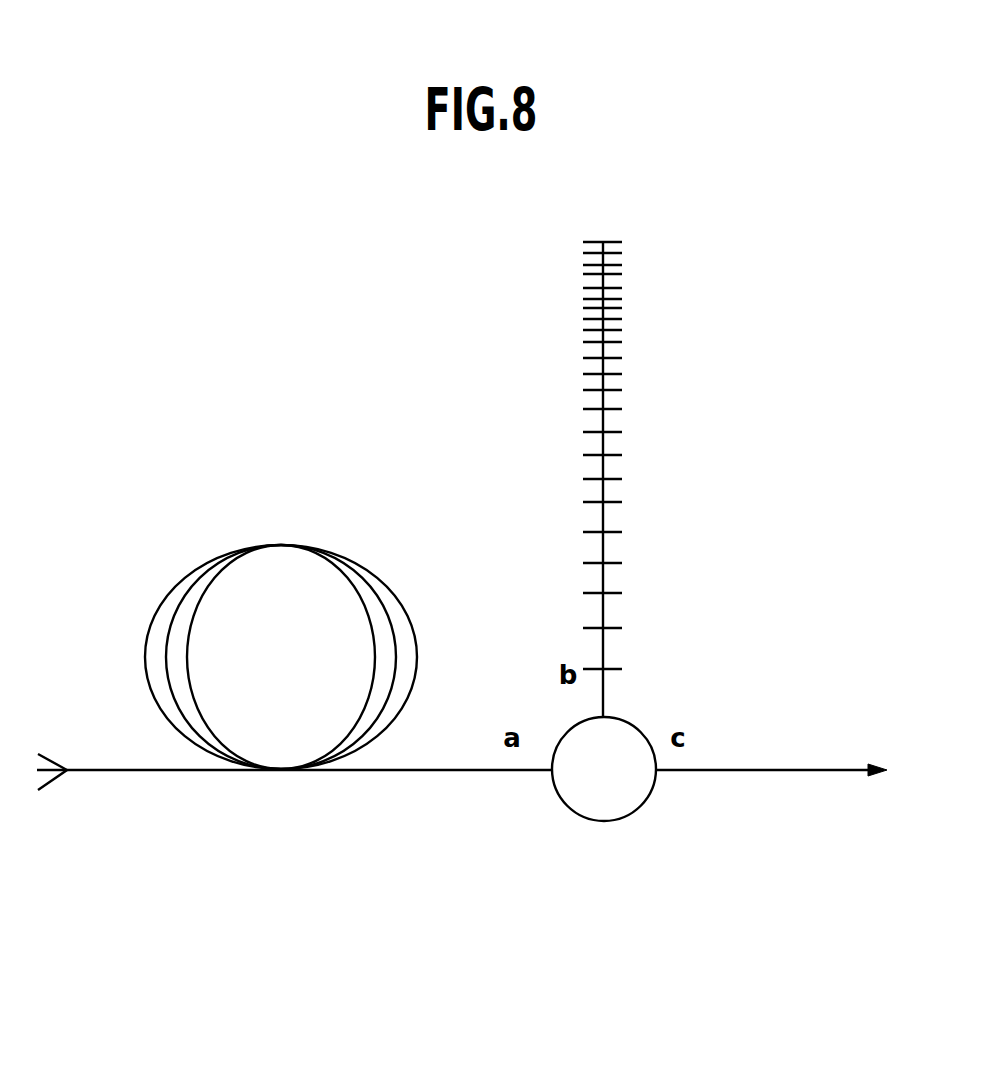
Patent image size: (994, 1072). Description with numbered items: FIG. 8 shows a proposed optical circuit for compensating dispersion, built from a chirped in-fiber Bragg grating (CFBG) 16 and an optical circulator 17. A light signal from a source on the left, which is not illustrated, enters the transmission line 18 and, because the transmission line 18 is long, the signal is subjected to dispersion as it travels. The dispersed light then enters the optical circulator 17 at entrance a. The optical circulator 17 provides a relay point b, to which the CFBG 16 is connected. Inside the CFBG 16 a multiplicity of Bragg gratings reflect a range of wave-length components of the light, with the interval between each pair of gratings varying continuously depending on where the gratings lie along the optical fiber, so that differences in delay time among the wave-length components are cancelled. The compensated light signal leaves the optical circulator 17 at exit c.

The chirped in-fiber Bragg grating 16 is at (622, 342).
The optical circulator 17 is at (618, 820).
The transmission line 18 is at (349, 551).